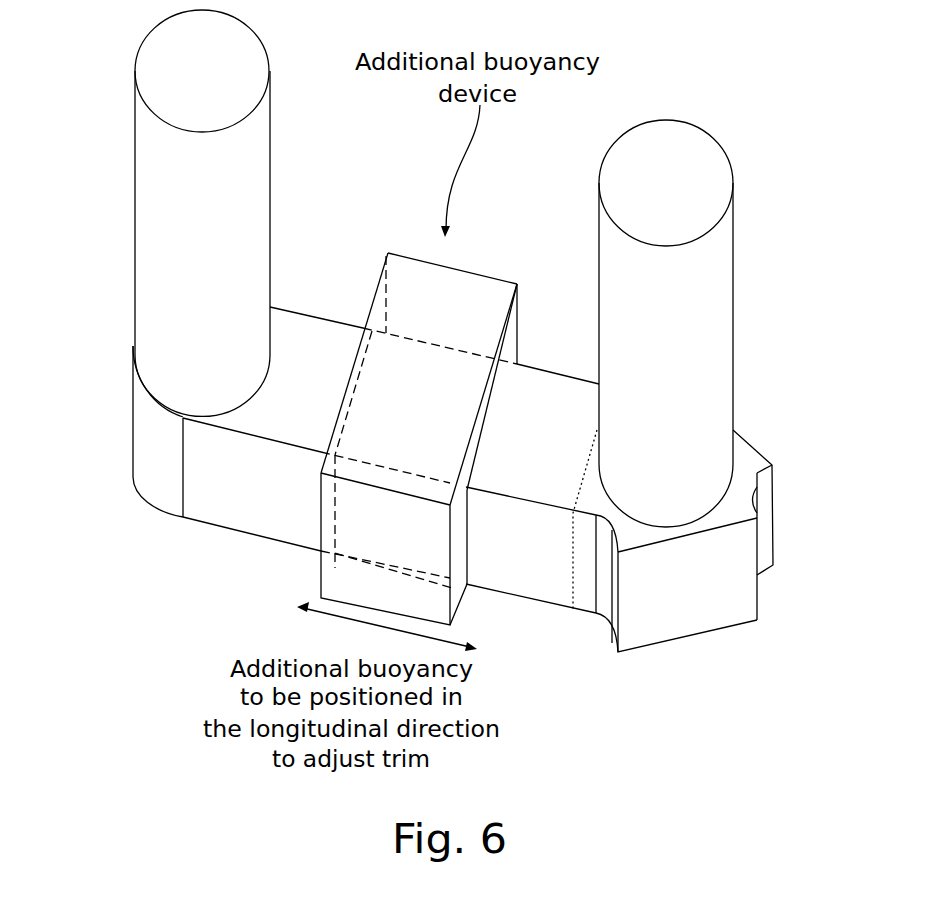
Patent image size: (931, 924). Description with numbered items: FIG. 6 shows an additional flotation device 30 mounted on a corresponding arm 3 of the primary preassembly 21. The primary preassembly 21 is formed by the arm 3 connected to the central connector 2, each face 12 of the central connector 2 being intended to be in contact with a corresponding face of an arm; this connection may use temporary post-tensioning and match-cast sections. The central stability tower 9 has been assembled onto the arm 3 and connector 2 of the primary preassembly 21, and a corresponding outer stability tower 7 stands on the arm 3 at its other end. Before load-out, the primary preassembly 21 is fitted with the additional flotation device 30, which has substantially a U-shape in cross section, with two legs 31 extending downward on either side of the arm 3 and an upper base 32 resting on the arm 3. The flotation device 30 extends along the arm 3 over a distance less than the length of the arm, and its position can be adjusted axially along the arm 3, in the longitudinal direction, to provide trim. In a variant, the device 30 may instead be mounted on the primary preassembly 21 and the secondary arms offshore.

The central connector 2 is at (760, 453).
The arm 3 is at (250, 508).
The outer stability tower 7 is at (142, 172).
The central stability tower 9 is at (720, 318).
The face of the central connector 12 is at (693, 613).
The primary preassembly 21 is at (515, 616).
The additional flotation device 30 is at (421, 283).
The leg 31 is at (514, 327).
The upper base 32 is at (376, 407).